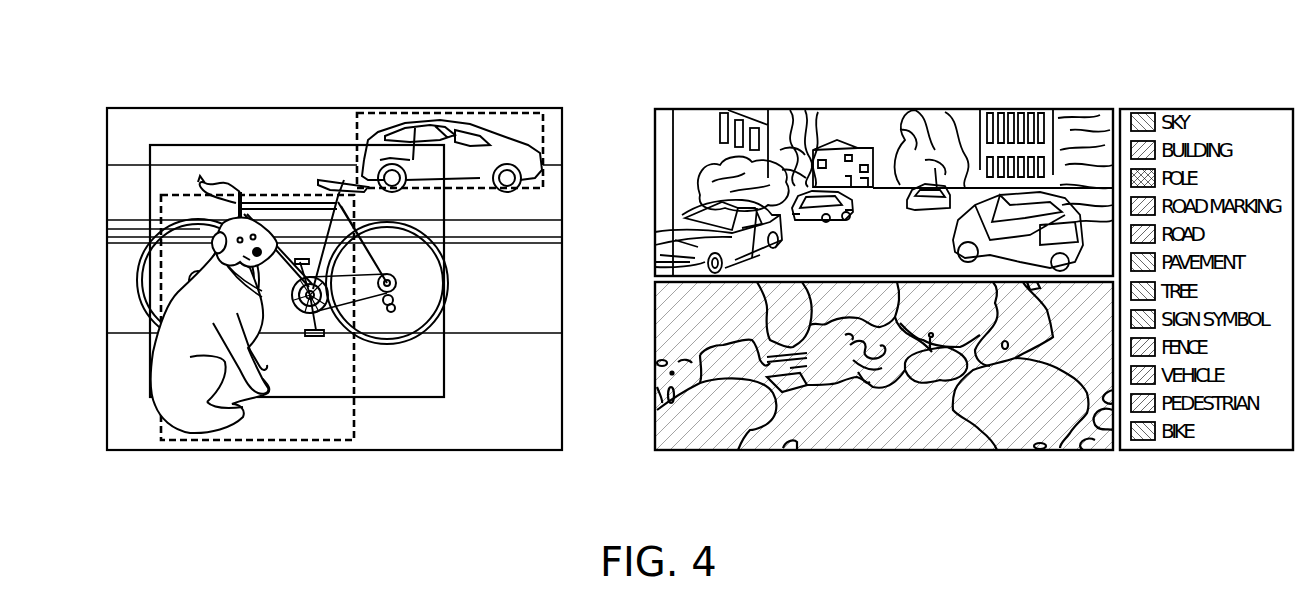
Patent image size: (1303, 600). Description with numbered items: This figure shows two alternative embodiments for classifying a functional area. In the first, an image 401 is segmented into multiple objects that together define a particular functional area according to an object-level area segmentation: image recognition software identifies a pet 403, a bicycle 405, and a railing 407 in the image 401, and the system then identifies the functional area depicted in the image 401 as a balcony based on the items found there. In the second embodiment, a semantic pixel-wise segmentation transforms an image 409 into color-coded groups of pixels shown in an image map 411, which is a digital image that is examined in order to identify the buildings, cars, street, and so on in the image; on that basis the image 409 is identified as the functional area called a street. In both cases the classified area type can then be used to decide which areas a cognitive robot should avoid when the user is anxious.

The image 401 is at (131, 490).
The pet 403 is at (173, 357).
The bicycle 405 is at (233, 185).
The railing 407 is at (125, 302).
The image 409 is at (942, 118).
The image map 411 is at (893, 400).